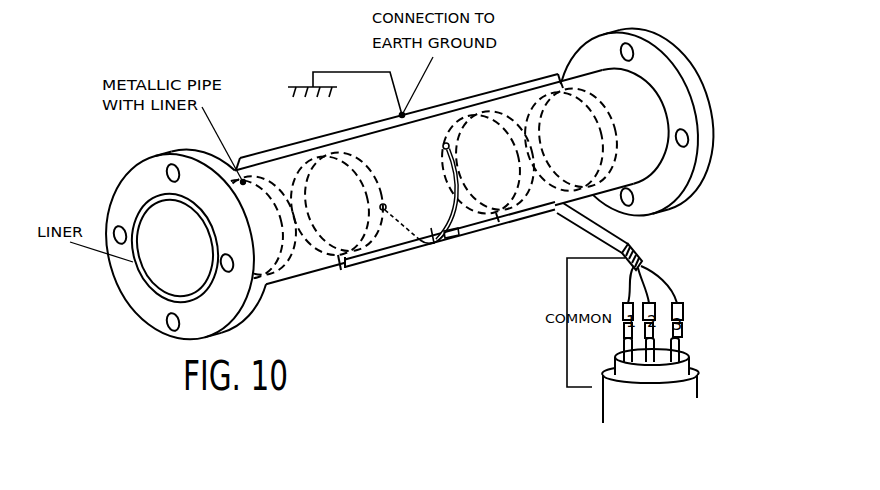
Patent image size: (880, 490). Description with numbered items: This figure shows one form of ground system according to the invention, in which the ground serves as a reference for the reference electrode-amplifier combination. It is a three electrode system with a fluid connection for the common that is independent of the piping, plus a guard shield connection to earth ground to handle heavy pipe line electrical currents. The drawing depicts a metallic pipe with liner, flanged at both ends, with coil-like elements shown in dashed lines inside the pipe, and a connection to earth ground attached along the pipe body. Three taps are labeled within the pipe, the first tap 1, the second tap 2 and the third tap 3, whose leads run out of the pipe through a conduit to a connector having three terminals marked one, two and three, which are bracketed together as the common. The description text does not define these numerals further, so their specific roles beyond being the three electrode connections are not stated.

The first electrode tap wire 1 is at (442, 184).
The second electrode tap wire 2 is at (406, 215).
The third electrode terminal 3 is at (439, 246).